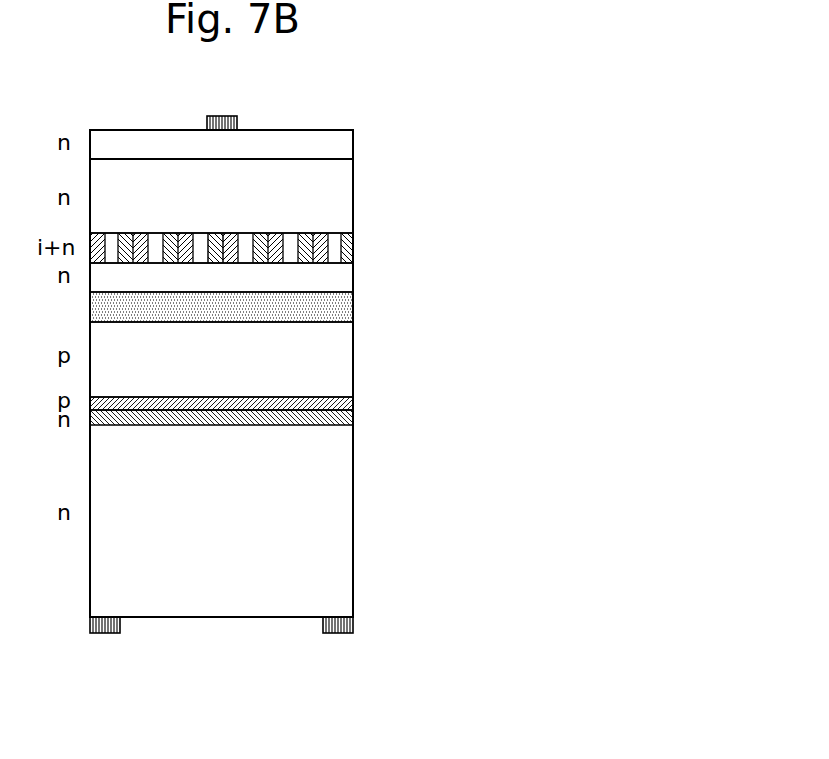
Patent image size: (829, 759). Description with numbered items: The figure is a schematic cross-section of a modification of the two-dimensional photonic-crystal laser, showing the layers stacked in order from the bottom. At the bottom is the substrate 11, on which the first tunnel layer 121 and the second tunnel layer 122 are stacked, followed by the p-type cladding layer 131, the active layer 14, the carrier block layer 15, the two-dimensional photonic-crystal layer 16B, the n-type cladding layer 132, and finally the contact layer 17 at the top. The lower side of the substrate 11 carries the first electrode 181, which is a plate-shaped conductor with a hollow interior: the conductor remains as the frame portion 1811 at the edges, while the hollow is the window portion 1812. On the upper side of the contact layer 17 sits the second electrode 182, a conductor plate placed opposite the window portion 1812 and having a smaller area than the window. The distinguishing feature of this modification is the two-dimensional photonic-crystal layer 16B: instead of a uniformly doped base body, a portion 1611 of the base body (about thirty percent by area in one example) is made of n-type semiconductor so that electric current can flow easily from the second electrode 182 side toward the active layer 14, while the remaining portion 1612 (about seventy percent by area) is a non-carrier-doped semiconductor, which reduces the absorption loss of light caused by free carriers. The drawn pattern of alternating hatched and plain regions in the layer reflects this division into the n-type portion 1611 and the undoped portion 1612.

The substrate 11 is at (338, 513).
The first tunnel layer 121 is at (351, 427).
The second tunnel layer 122 is at (353, 408).
The p-type cladding layer 131 is at (338, 363).
The n-type cladding layer 132 is at (338, 200).
The active layer 14 is at (338, 310).
The carrier block layer 15 is at (338, 280).
The two-dimensional photonic-crystal layer 16B is at (368, 253).
The portion of the base body 1611 is at (268, 232).
The remaining portion of the base body 1612 is at (280, 232).
The contact layer 17 is at (338, 148).
The first electrode 181 is at (368, 629).
The frame portion 1811 is at (102, 633).
The window portion 1812 is at (220, 626).
The second electrode 182 is at (225, 116).